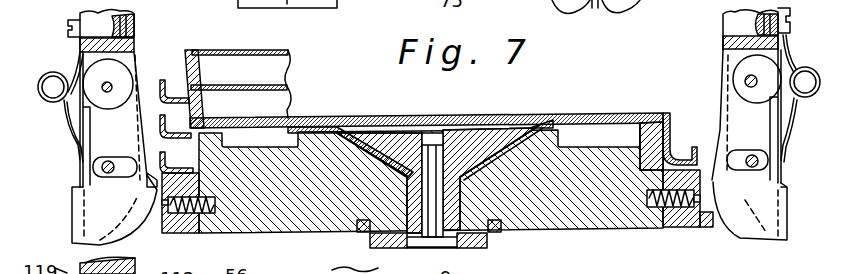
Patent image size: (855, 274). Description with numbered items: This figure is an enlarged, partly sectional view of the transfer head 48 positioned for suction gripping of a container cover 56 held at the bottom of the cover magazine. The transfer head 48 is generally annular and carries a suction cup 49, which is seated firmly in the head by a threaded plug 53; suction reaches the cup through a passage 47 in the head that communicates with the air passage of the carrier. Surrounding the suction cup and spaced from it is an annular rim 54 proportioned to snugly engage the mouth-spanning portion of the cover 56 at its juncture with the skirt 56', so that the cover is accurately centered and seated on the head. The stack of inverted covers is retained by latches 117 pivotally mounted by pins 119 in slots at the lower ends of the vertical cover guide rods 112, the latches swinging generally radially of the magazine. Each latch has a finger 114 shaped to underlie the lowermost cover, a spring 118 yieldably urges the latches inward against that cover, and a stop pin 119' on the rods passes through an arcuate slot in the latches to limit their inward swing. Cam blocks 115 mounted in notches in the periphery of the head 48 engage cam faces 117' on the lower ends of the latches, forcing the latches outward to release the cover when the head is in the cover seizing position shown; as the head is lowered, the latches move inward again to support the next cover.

The passage 47 is at (430, 157).
The transfer head 48 is at (547, 217).
The suction cup 49 is at (350, 140).
The threaded plug 53 is at (462, 176).
The annular rim 54 is at (649, 132).
The container cover 56 is at (426, 118).
The skirt 56' is at (225, 96).
The cover guide rods 112 is at (128, 32).
The finger 114 is at (700, 172).
The cam blocks 115 is at (193, 229).
The latches 117 is at (428, 210).
The cam faces 117' is at (178, 229).
The spring 118 is at (67, 126).
The pins 119 is at (429, 67).
The stop pin 119' is at (395, 163).